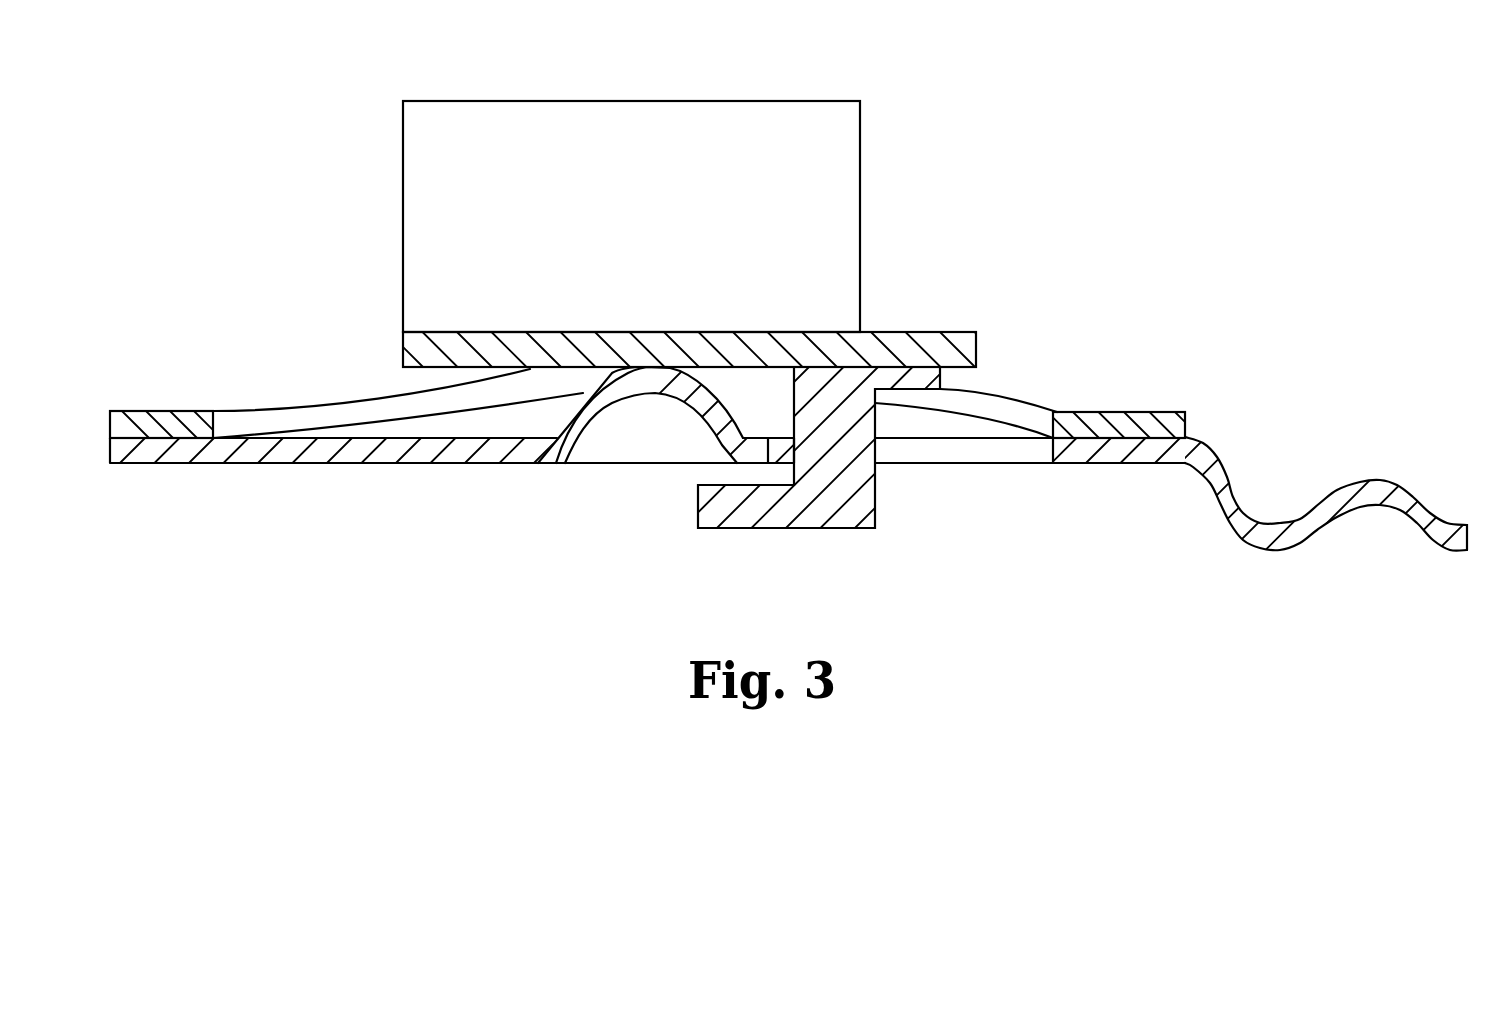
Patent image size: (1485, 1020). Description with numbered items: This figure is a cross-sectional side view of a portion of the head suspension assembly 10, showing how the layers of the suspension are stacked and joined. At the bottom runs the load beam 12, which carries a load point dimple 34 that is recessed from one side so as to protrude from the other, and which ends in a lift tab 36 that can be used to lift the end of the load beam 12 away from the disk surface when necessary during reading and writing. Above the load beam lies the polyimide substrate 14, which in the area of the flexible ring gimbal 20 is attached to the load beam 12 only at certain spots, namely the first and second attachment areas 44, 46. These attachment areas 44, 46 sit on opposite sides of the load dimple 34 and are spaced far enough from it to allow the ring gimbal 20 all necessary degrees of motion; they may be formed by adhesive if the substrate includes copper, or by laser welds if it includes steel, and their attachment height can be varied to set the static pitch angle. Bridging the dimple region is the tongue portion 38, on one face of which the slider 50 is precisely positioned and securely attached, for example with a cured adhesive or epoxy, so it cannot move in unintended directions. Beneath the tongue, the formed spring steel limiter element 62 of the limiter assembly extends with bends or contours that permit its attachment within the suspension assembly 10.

The suspension assembly 10 is at (1098, 172).
The load beam 12 is at (247, 452).
The polyimide substrate 14 is at (260, 418).
The ring gimbal 20 is at (1017, 407).
The load point dimple 34 is at (628, 383).
The lift tab 36 is at (1365, 490).
The tongue portion 38 is at (940, 331).
The first attachment area 44 is at (153, 430).
The second attachment area 46 is at (1143, 411).
The slider 50 is at (780, 132).
The limiter element 62 is at (798, 511).